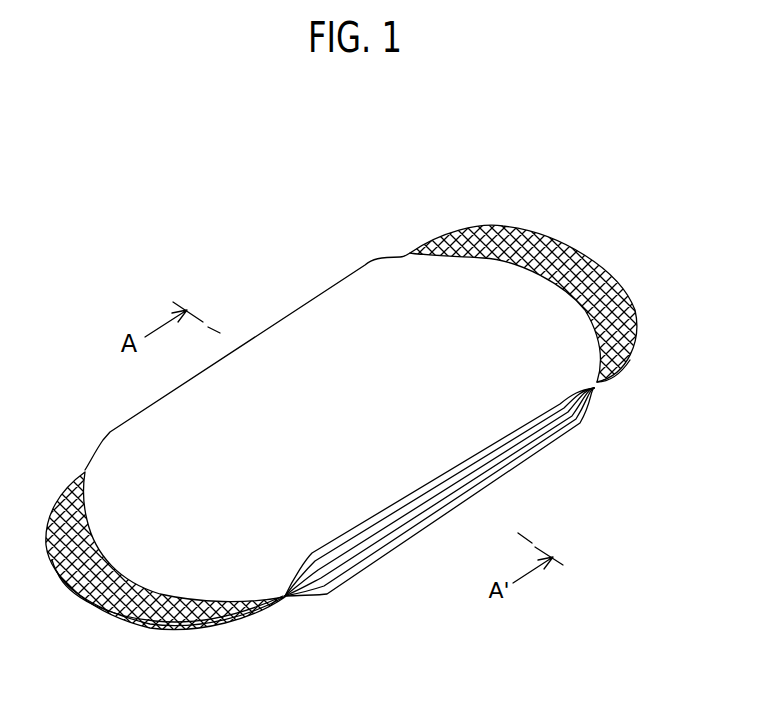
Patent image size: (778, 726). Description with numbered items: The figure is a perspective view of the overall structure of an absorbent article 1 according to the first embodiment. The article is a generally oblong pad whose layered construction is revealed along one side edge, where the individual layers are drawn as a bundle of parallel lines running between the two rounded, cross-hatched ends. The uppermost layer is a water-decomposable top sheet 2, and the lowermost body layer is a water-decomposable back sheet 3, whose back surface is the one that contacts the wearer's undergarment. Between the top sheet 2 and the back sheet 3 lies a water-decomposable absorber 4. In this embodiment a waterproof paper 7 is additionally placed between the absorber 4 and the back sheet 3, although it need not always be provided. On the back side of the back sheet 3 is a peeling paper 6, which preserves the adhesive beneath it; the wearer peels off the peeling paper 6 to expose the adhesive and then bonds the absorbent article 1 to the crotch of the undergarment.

The absorbent article 1 is at (278, 270).
The top sheet 2 is at (348, 537).
The back sheet 3 is at (478, 482).
The absorber 4 is at (395, 518).
The peeling paper 6 is at (527, 457).
The waterproof paper 7 is at (437, 498).